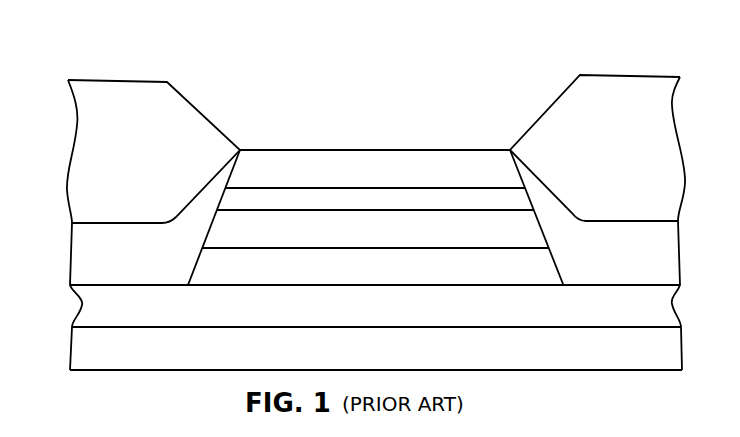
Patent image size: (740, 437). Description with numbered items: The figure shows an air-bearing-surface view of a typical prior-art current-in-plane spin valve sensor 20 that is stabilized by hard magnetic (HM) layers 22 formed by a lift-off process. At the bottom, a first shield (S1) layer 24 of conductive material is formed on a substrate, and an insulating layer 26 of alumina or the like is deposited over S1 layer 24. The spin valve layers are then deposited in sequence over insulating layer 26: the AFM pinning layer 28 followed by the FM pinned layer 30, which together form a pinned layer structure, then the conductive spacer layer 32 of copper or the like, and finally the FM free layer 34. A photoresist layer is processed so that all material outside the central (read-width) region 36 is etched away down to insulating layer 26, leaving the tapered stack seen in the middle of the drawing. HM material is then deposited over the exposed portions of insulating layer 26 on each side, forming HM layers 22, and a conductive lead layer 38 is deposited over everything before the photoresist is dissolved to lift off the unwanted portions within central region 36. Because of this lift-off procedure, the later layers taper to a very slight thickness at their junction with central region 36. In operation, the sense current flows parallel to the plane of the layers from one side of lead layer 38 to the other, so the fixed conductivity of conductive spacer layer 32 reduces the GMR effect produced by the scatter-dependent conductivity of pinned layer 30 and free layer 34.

The CIP SV sensor 20 is at (540, 66).
The hard magnetic (HM) layer 22 is at (175, 266).
The first shield (S1) layer 24 is at (466, 357).
The insulating layer 26 is at (466, 316).
The AFM pinning layer 28 is at (466, 277).
The FM pinned layer 30 is at (466, 239).
The conductive spacer layer 32 is at (292, 195).
The FM free layer 34 is at (464, 182).
The central (read-width) region 36 is at (510, 107).
The conductive lead layer 38 is at (141, 121).